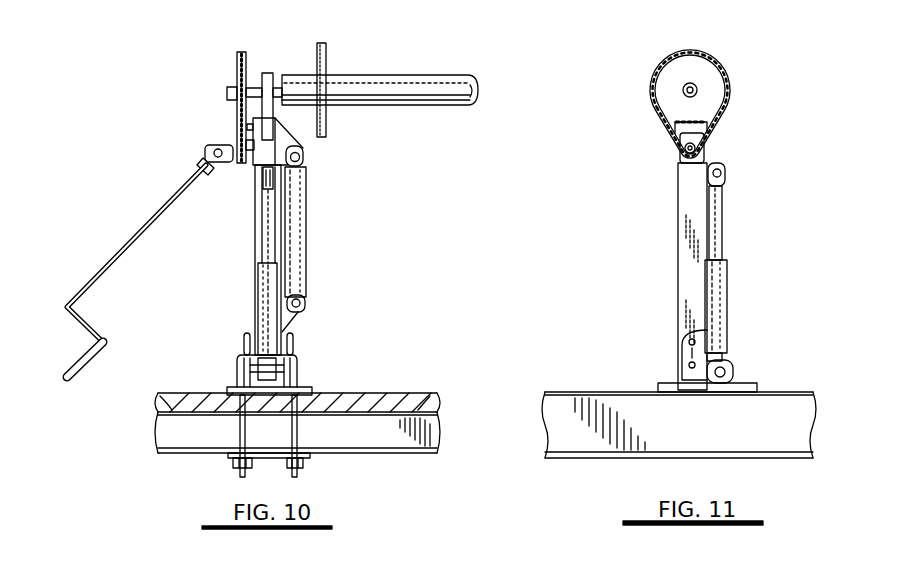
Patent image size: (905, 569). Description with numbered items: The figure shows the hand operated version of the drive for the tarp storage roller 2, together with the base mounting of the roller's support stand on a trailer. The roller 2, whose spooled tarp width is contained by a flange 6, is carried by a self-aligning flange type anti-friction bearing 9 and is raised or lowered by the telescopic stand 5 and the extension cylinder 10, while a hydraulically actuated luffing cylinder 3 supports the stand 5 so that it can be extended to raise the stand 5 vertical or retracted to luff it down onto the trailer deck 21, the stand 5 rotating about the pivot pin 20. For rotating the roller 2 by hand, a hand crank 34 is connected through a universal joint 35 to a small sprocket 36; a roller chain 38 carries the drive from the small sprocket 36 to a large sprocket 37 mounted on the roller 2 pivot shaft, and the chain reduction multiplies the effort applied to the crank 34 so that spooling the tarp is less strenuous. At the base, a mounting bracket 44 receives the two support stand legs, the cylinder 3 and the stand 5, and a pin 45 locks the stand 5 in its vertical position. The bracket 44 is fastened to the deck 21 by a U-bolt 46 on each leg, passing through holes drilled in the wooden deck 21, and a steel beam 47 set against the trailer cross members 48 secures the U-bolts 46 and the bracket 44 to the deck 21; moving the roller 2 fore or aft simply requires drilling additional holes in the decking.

In FIG. 10, the tarp storage roller 2 is at (400, 77).
In FIG. 10, the luffing cylinder 3 is at (262, 286).
In FIG. 11, the luffing cylinder 3 is at (718, 276).
In FIG. 10, the telescopic stand 5 is at (255, 230).
In FIG. 11, the telescopic stand 5 is at (690, 195).
In FIG. 10, the flange 6 is at (325, 48).
In FIG. 10, the flange type anti-friction bearing 9 is at (265, 73).
In FIG. 10, the extension cylinder 10 is at (300, 252).
In FIG. 10, the pivot pin 20 is at (244, 346).
In FIG. 11, the pivot pin 20 is at (688, 342).
In FIG. 10, the trailer deck 21 is at (372, 393).
In FIG. 11, the trailer deck 21 is at (775, 392).
In FIG. 10, the hand crank 34 is at (103, 308).
In FIG. 10, the universal joint 35 is at (204, 152).
In FIG. 10, the small sprocket 36 is at (236, 141).
In FIG. 11, the small sprocket 36 is at (706, 141).
In FIG. 10, the large sprocket 37 is at (234, 73).
In FIG. 11, the large sprocket 37 is at (672, 82).
In FIG. 10, the roller chain 38 is at (238, 52).
In FIG. 11, the roller chain 38 is at (668, 136).
In FIG. 10, the mounting bracket 44 is at (247, 332).
In FIG. 11, the mounting bracket 44 is at (688, 352).
In FIG. 11, the pin 45 is at (688, 366).
In FIG. 10, the U-bolt 46 is at (237, 372).
In FIG. 11, the U-bolt 46 is at (700, 387).
In FIG. 10, the steel beam 47 is at (255, 470).
In FIG. 10, the trailer cross members 48 is at (200, 432).